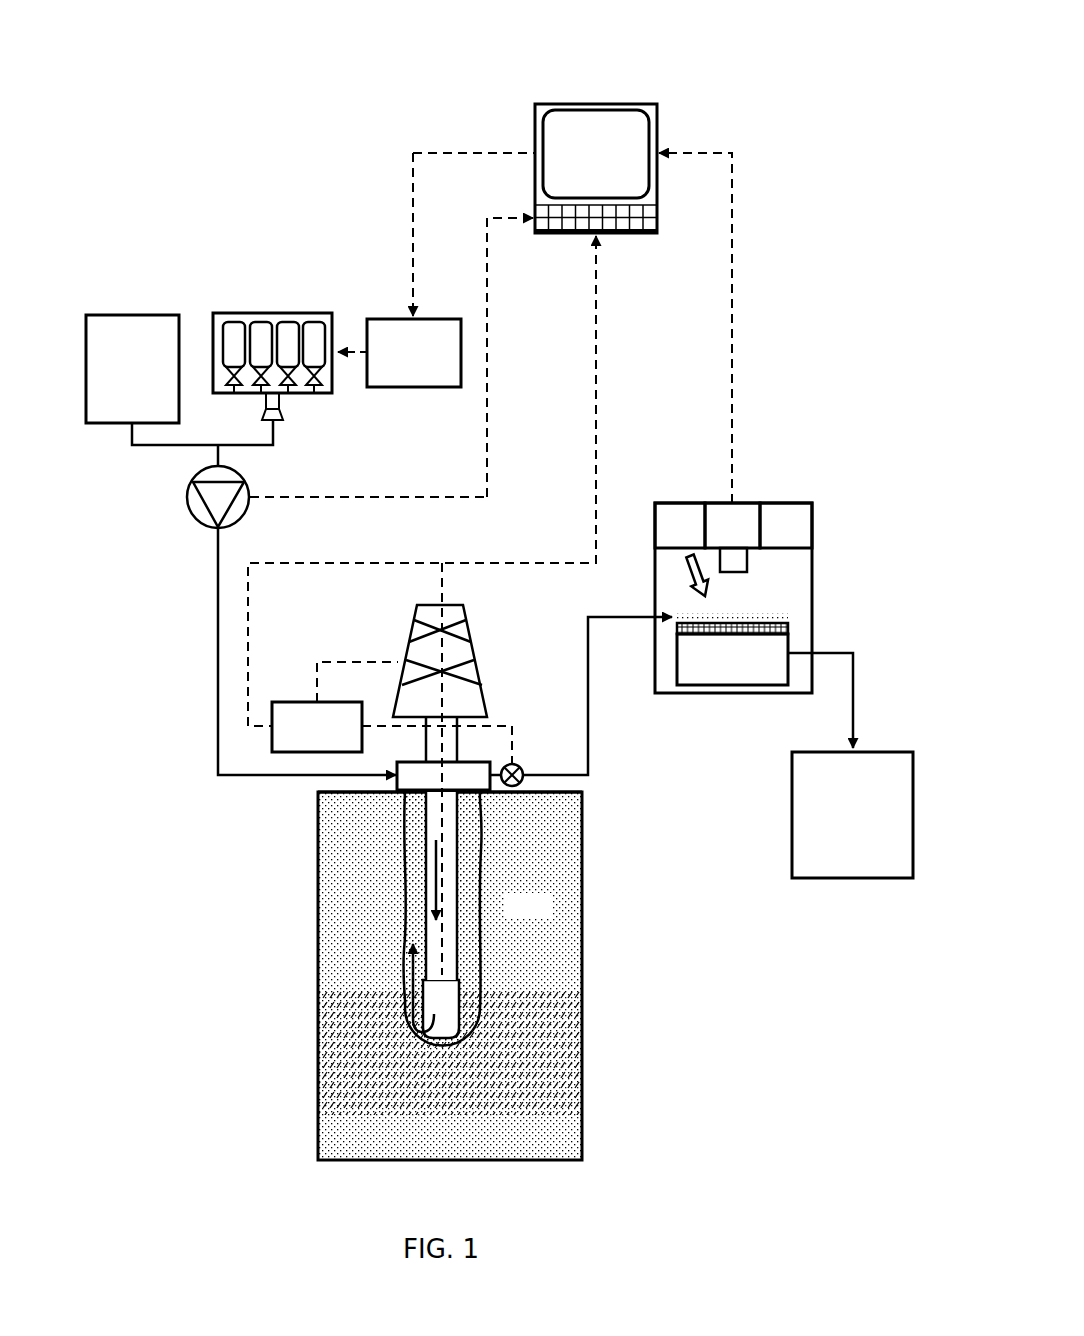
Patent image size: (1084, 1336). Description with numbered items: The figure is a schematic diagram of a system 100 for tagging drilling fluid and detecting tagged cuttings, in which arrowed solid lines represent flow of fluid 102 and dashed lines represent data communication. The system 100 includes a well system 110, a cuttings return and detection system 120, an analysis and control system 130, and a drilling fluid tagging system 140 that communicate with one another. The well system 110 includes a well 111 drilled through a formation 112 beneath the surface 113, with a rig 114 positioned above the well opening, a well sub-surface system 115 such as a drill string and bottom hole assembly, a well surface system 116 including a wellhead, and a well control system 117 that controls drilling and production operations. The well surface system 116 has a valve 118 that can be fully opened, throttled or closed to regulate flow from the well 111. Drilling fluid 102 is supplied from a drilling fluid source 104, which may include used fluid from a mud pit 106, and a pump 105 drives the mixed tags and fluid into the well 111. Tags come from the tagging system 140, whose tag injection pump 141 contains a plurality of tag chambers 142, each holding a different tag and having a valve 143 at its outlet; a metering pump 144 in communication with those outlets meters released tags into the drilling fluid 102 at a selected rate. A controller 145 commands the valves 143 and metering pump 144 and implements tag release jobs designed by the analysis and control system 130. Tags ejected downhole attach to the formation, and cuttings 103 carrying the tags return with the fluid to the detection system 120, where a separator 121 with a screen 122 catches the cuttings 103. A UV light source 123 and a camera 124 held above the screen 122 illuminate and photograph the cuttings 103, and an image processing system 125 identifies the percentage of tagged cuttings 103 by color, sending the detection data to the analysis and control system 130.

The system 100 is at (188, 55).
The drilling fluid 102 is at (215, 624).
The cuttings 103 is at (468, 880).
The drilling fluid source 104 is at (111, 362).
The pump 105 is at (243, 520).
The mud pit 106 is at (840, 801).
The well system 110 is at (388, 626).
The well 111 is at (404, 833).
The formation 112 is at (511, 916).
The surface 113 is at (565, 792).
The rig 114 is at (467, 638).
The well sub-surface system 115 is at (452, 998).
The well surface system 116 is at (502, 710).
The well control system 117 is at (332, 741).
The valve 118 is at (518, 763).
The cuttings return and detection system 120 is at (777, 564).
The separator 121 is at (715, 679).
The screen 122 is at (789, 628).
The UV light source 123 is at (665, 544).
The camera 124 is at (716, 544).
The image processing system 125 is at (770, 544).
The analysis and control system 130 is at (658, 68).
The drilling fluid tagging system 140 is at (251, 231).
The tag injection pump 141 is at (310, 313).
The tag chamber 142 is at (285, 330).
The valve 143 is at (313, 380).
The metering pump 144 is at (281, 410).
The controller 145 is at (393, 366).